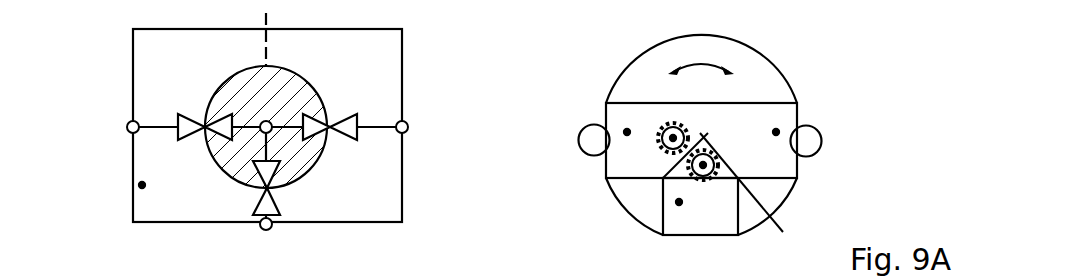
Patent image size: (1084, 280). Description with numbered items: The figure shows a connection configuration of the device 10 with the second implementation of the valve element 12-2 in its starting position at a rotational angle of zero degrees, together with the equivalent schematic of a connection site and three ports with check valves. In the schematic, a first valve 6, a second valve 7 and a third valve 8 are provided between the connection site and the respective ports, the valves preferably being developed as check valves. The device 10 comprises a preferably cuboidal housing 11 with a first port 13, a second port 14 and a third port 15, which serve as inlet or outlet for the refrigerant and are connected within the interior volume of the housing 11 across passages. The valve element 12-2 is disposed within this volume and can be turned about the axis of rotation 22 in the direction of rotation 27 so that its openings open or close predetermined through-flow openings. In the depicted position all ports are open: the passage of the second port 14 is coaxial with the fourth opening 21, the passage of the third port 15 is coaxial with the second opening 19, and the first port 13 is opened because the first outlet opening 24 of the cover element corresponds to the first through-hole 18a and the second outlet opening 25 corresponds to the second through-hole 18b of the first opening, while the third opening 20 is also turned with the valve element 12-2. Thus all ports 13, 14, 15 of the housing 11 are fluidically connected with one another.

The device 10 is at (118, 81).
The valve element 12-2 is at (228, 80).
The axis of rotation 22 is at (268, 62).
The second port 14 is at (128, 130).
The third port 15 is at (407, 125).
The second valve 7 is at (186, 141).
The third valve 8 is at (348, 141).
The first valve 6 is at (277, 201).
The first port 13 is at (260, 228).
The housing 11 is at (138, 188).
The direction of rotation 27 is at (704, 64).
The first through-hole 18a is at (668, 131).
The second through-hole 18b is at (712, 177).
The fourth opening 21 is at (623, 129).
The second opening 19 is at (780, 129).
The third opening 20 is at (676, 206).
The first outlet opening 24 is at (662, 146).
The second outlet opening 25 is at (754, 190).